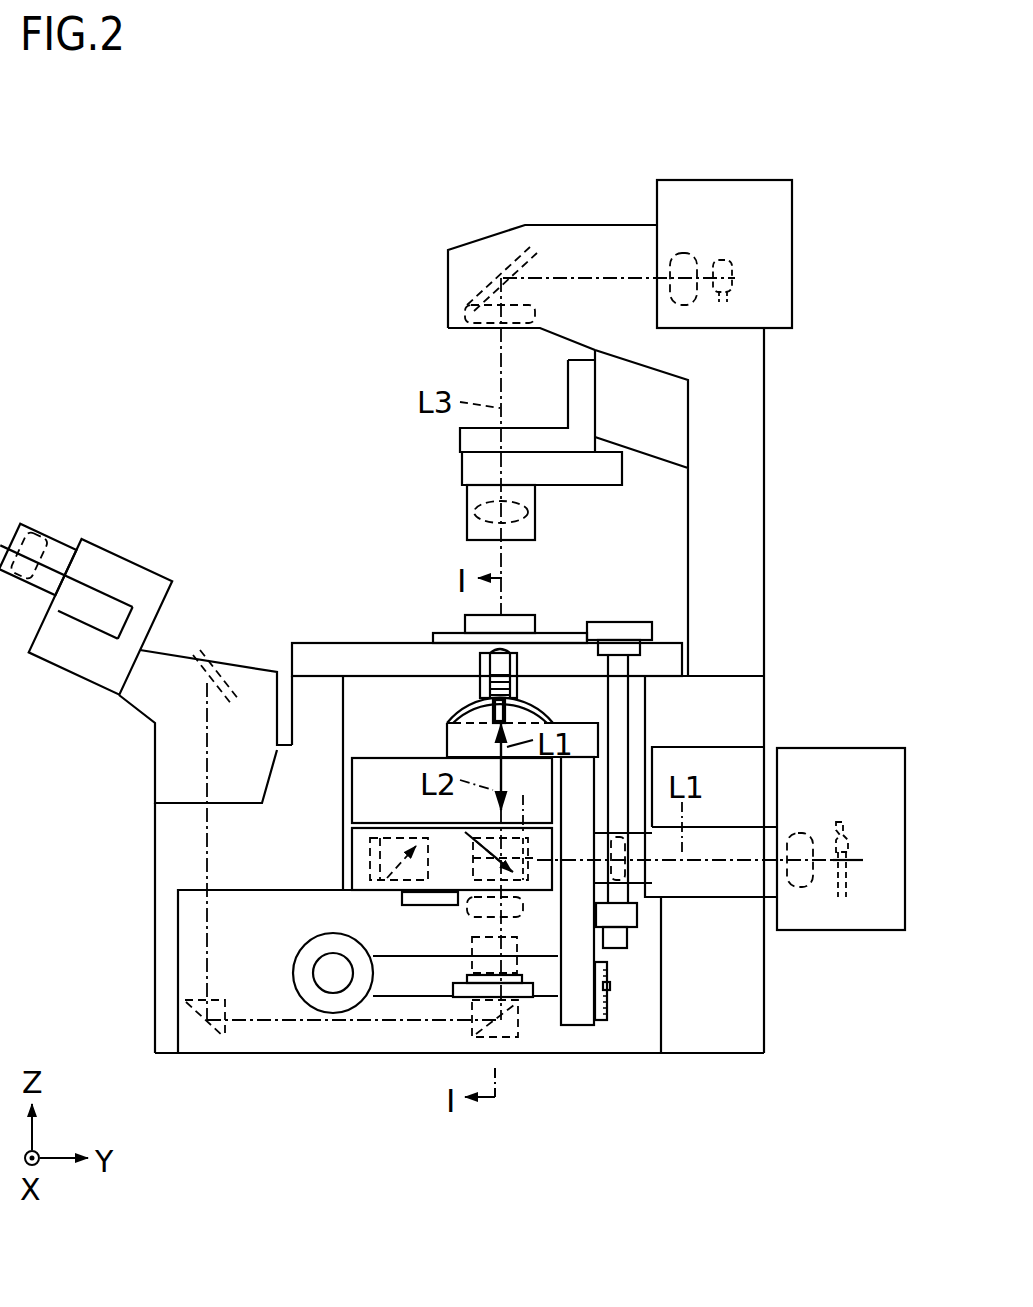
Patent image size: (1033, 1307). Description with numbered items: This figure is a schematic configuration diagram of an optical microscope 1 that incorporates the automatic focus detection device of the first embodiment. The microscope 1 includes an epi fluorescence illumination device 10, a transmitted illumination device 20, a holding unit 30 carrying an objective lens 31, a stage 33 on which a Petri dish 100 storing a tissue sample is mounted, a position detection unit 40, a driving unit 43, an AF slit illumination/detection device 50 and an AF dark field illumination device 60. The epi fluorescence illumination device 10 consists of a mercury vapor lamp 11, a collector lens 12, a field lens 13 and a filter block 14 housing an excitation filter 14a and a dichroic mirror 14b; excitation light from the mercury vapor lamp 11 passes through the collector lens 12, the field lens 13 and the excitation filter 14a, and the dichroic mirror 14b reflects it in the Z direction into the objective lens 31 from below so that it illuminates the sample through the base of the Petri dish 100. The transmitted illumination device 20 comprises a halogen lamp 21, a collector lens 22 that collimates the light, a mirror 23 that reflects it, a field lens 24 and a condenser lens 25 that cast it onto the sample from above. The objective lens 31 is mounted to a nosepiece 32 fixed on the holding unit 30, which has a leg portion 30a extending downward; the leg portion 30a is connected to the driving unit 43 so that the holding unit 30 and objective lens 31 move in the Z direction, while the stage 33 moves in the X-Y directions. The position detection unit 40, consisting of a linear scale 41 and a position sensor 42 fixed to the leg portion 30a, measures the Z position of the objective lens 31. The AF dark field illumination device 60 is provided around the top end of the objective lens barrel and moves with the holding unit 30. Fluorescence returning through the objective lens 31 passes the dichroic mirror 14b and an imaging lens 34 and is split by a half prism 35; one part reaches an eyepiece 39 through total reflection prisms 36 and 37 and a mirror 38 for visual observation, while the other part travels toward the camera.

The optical microscope 1 is at (222, 268).
The epi fluorescence illumination device 10 is at (726, 780).
The mercury vapor lamp 11 is at (843, 897).
The collector lens 12 is at (800, 887).
The field lens 13 is at (624, 866).
The filter block 14 is at (523, 883).
The excitation filter 14a is at (530, 766).
The dichroic mirror 14b is at (457, 823).
The transmitted illumination device 20 is at (470, 364).
The halogen lamp 21 is at (722, 260).
The collector lens 22 is at (681, 253).
The mirror 23 is at (513, 256).
The field lens 24 is at (538, 314).
The condenser lens 25 is at (530, 512).
The holding unit 30 is at (460, 743).
The leg portion 30a is at (577, 1015).
The objective lens 31 is at (517, 660).
The nosepiece 32 is at (543, 708).
The stage 33 is at (330, 643).
The imaging lens 34 is at (465, 905).
The half prism 35 is at (470, 940).
The total reflection prism 36 is at (505, 1005).
The total reflection prism 37 is at (212, 1035).
The mirror 38 is at (217, 650).
The eyepiece 39 is at (40, 532).
The position detection unit 40 is at (698, 1118).
The linear scale 41 is at (598, 1020).
The position sensor 42 is at (608, 988).
The driving unit 43 is at (333, 1003).
The AF slit illumination/detection device 50 is at (370, 790).
The AF dark field illumination device 60 is at (480, 713).
The Petri dish 100 is at (465, 620).